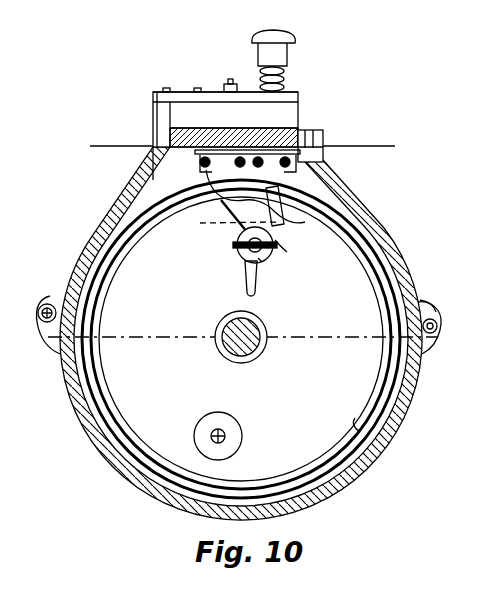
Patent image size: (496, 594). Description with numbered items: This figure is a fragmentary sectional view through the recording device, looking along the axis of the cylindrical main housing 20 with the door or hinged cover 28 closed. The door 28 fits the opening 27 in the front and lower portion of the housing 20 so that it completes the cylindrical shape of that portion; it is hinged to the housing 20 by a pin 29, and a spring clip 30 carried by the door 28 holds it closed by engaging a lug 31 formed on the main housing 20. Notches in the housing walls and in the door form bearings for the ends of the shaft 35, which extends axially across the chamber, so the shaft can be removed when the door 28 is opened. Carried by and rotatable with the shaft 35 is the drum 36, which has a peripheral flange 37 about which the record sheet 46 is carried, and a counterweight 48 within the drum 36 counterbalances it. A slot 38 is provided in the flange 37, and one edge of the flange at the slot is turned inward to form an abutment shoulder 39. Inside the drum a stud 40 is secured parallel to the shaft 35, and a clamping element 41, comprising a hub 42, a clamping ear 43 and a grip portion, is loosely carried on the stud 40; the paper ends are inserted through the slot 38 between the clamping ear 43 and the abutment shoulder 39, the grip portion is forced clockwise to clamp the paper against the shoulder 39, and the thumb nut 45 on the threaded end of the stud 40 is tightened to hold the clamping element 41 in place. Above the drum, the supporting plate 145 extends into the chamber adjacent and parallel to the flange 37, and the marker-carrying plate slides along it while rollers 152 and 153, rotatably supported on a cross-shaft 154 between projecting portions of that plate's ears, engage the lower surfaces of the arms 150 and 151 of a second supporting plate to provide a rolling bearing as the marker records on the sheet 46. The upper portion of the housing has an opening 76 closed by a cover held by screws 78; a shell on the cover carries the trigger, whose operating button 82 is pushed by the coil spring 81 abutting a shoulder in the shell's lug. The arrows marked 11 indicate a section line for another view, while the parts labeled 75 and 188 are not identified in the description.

The section line 11 is at (108, 140).
The main housing 20 is at (393, 249).
The opening 27 is at (421, 352).
The door 28 is at (131, 480).
The pin 29 is at (47, 311).
The spring clip 30 is at (428, 302).
The lug 31 is at (433, 338).
The shaft 35 is at (263, 345).
The drum 36 is at (355, 418).
The peripheral flange 37 is at (388, 326).
The slot 38 is at (230, 222).
The abutment shoulder 39 is at (292, 230).
The stud 40 is at (267, 268).
The clamping element 41 is at (246, 284).
The hub 42 is at (243, 262).
The clamping ear 43 is at (238, 246).
The thumb nut 45 is at (290, 250).
The record sheet 46 is at (122, 432).
The counterweight 48 is at (243, 437).
The switch housing 75 is at (325, 158).
The opening 76 is at (152, 156).
The screws 78 is at (318, 130).
The coil spring 81 is at (284, 81).
The operating button 82 is at (256, 43).
The supporting plate 145 is at (232, 196).
The arm 150 is at (228, 150).
The arm 151 is at (255, 150).
The roller 152 is at (210, 145).
The roller 153 is at (276, 150).
The cross-shaft 154 is at (243, 150).
The cover 188 is at (187, 92).